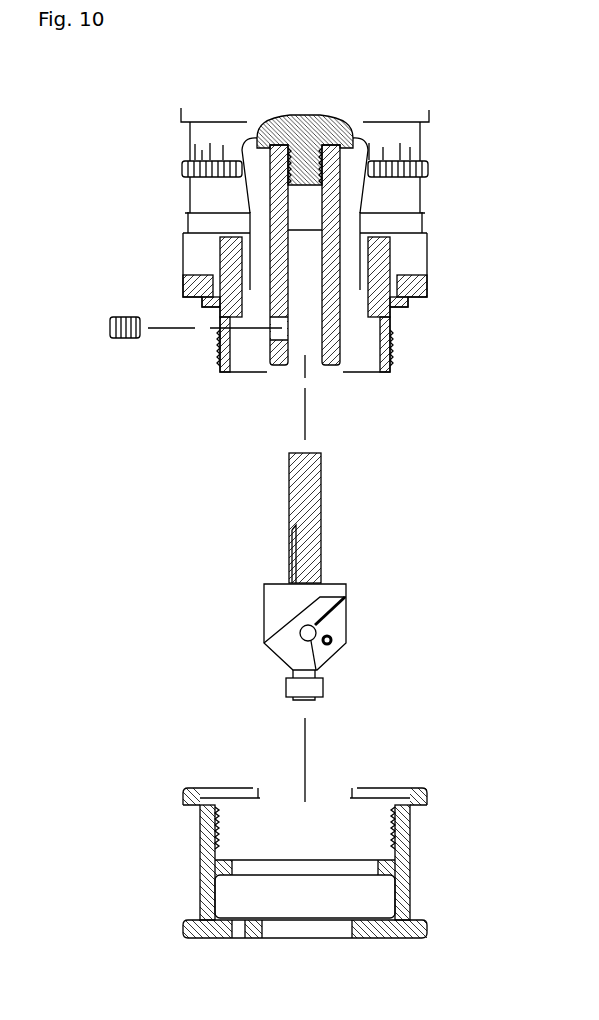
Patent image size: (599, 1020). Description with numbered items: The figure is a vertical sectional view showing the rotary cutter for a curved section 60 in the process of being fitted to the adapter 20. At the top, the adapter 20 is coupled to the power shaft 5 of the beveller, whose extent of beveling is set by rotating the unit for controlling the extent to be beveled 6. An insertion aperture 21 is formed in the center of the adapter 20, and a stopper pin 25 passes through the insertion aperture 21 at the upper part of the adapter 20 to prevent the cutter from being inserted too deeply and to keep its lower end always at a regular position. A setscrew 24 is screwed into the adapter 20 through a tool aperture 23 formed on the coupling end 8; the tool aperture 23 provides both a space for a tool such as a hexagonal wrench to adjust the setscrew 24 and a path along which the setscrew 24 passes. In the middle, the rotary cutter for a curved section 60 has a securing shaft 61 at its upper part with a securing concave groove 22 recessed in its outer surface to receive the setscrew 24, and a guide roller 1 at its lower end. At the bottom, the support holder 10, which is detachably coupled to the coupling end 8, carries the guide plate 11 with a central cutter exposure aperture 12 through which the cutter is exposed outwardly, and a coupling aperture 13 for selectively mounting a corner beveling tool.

The guide roller 1 is at (317, 688).
The power shaft 5 is at (310, 137).
The unit for controlling the extent to be beveled 6 is at (418, 172).
The coupling end 8 is at (393, 347).
The support holder 10 is at (404, 892).
The guide plate 11 is at (417, 930).
The cutter exposure aperture 12 is at (337, 928).
The coupling aperture 13 is at (242, 932).
The adapter 20 is at (280, 283).
The insertion aperture 21 is at (303, 277).
The securing concave groove 22 is at (293, 553).
The tool aperture 23 is at (218, 348).
The setscrew 24 is at (118, 317).
The stopper pin 25 is at (292, 226).
The rotary cutter for a curved section 60 is at (277, 615).
The securing shaft 61 is at (307, 510).